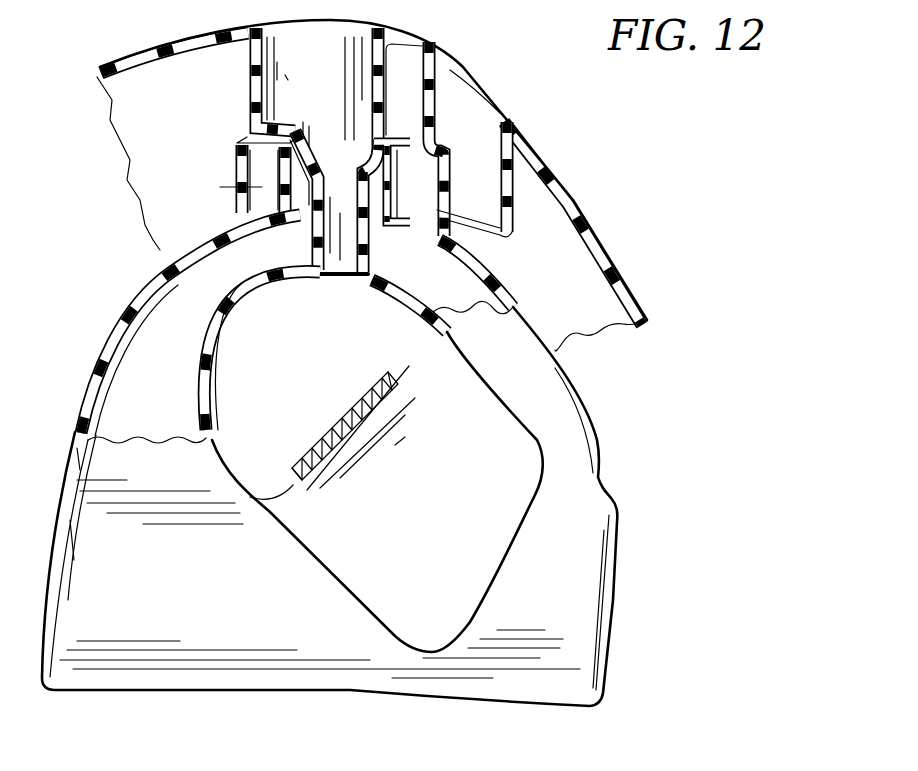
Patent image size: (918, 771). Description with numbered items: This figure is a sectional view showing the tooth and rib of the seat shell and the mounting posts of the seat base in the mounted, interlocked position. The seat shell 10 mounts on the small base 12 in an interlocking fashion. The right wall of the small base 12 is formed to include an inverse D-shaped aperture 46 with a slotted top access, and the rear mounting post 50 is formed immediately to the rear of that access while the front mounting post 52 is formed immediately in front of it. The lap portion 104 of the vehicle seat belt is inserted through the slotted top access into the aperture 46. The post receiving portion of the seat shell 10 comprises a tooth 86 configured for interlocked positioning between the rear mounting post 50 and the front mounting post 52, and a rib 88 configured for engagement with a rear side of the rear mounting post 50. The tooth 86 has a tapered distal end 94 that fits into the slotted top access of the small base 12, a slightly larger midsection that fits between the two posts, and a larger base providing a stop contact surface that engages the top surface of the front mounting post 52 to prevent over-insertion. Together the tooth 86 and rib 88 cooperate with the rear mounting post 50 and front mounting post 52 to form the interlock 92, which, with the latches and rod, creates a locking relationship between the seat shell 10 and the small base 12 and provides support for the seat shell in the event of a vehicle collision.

The seat shell 10 is at (553, 168).
The small base 12 is at (140, 360).
The inverse D-shaped aperture 46 is at (380, 347).
The rear mounting post 50 is at (413, 198).
The front mounting post 52 is at (260, 186).
The tooth 86 is at (328, 62).
The rib 88 is at (467, 120).
The interlock 92 is at (195, 157).
The tapered distal end 94 is at (340, 278).
The lap portion 104 is at (340, 418).